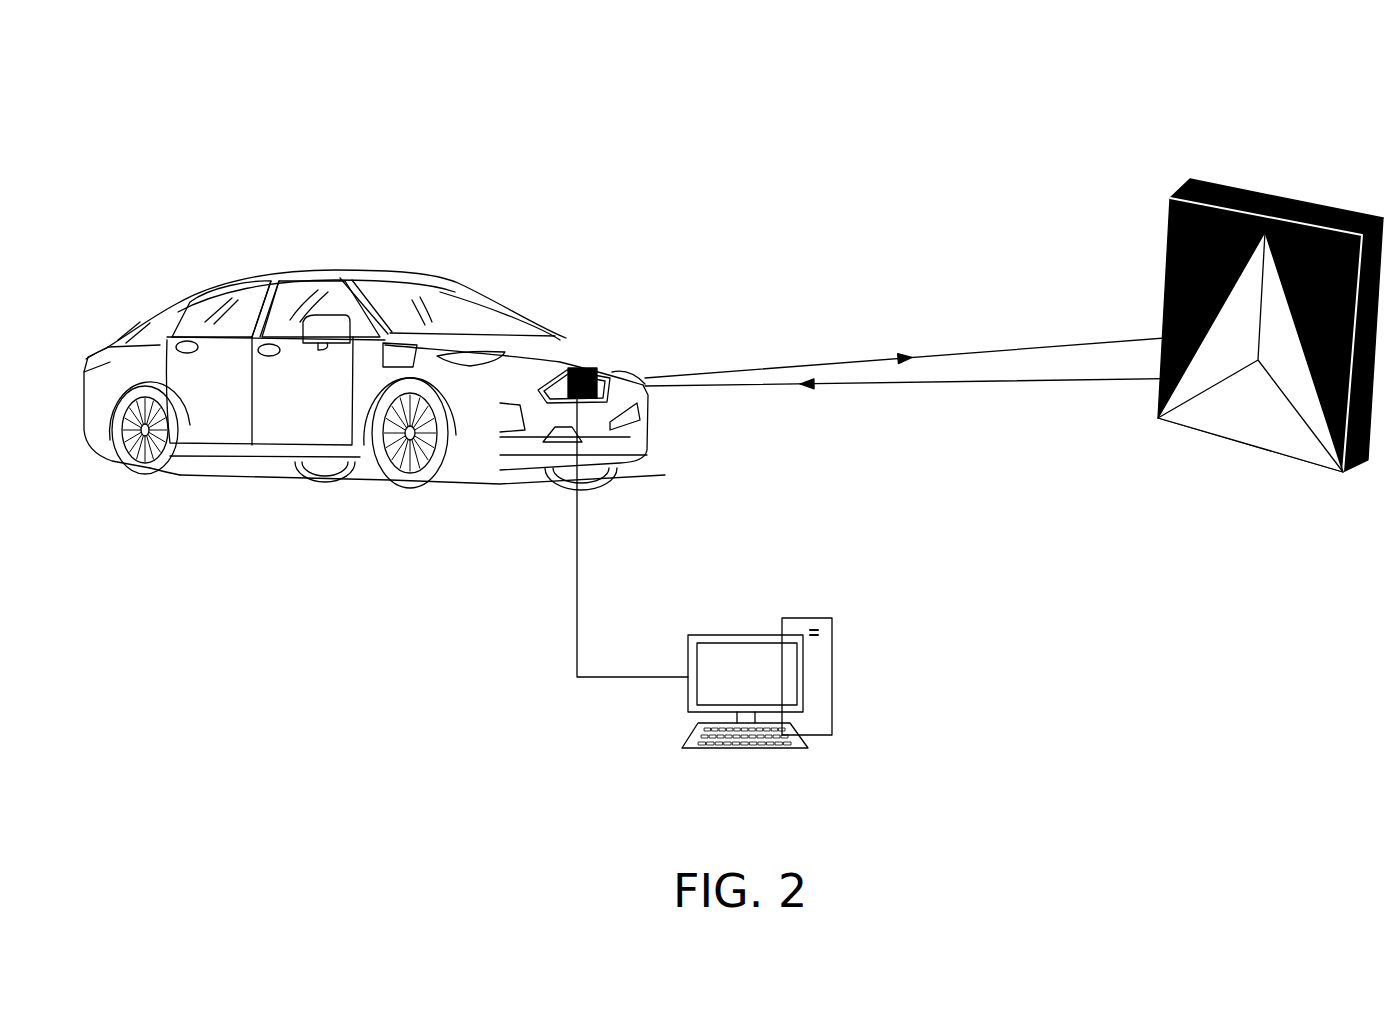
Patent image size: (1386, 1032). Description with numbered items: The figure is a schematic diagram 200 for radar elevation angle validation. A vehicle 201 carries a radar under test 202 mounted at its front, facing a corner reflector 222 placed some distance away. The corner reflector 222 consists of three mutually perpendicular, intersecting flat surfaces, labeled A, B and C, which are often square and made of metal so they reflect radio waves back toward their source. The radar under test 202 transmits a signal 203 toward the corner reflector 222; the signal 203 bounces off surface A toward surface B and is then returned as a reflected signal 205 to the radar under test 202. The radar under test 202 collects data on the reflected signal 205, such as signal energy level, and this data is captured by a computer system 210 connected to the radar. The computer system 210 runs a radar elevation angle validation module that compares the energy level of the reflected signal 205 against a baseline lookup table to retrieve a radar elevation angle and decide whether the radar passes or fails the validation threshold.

The schematic diagram 200 is at (186, 58).
The vehicle 201 is at (435, 270).
The radar under test 202 is at (584, 369).
The signal 203 is at (836, 357).
The reflected signal 205 is at (880, 385).
The computer system 210 is at (718, 634).
The corner reflector 222 is at (1245, 193).